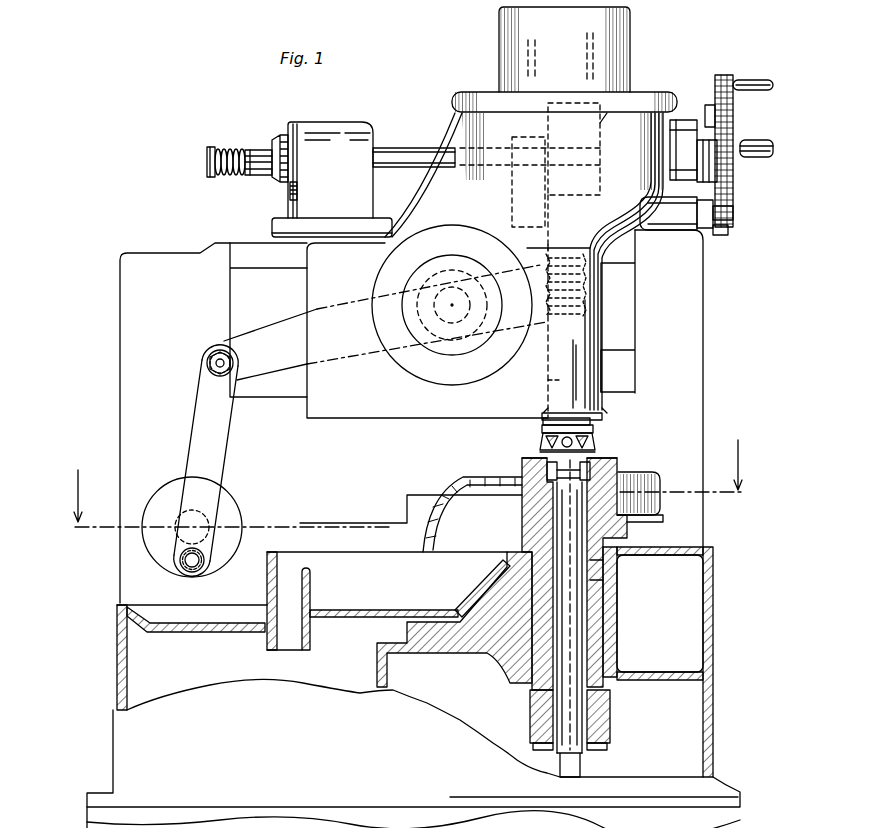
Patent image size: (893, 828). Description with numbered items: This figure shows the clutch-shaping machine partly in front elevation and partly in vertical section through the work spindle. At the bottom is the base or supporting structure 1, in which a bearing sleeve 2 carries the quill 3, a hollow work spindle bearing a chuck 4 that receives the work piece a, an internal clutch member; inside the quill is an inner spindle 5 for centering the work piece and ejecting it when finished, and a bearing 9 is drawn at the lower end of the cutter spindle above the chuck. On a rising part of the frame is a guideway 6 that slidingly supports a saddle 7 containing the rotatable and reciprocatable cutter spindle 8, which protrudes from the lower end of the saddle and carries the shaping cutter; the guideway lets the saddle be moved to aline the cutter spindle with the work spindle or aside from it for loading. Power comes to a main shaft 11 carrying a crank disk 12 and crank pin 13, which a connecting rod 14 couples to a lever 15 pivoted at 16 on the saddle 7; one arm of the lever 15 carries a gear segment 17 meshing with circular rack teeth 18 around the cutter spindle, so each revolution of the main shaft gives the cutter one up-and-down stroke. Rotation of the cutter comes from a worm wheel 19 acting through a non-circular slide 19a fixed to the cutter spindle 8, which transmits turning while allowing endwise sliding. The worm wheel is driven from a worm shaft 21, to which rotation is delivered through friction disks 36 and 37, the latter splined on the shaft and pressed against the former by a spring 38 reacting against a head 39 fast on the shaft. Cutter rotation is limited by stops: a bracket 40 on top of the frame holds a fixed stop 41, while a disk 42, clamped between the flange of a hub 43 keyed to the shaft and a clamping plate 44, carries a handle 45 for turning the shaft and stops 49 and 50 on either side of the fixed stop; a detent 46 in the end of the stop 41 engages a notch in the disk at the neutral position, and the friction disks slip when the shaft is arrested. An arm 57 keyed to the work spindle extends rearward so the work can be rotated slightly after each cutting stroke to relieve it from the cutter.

The base or supporting structure 1 is at (690, 422).
The bearing sleeve 2 is at (603, 578).
The quill 3 is at (600, 562).
The chuck 4 is at (615, 472).
The inner spindle 5 is at (572, 620).
The guideway 6 is at (622, 372).
The saddle 7 is at (573, 342).
The cutter spindle 8 is at (560, 368).
The bearing 9 is at (592, 441).
The work piece a is at (603, 456).
The main shaft 11 is at (235, 500).
The crank disk 12 is at (237, 540).
The crank pin 13 is at (205, 572).
The connecting rod 14 is at (210, 425).
The lever 15 is at (280, 335).
The pivot 16 is at (425, 309).
The gear segment 17 is at (507, 262).
The circular rack teeth 18 is at (593, 290).
The worm wheel 19 is at (490, 175).
The non-circular slide 19a is at (632, 95).
The worm shaft 21 is at (755, 148).
The friction disk 36 is at (282, 135).
The friction disk 37 is at (271, 148).
The spring 38 is at (238, 150).
The head 39 is at (207, 152).
The bracket 40 is at (683, 212).
The fixed stop 41 is at (708, 228).
The disk 42 is at (733, 213).
The hub 43 is at (730, 118).
The clamping plate 44 is at (709, 118).
The handle 45 is at (772, 89).
The detent 46 is at (728, 232).
The stop 49 is at (740, 195).
The stop 50 is at (705, 165).
The arm 57 is at (610, 722).